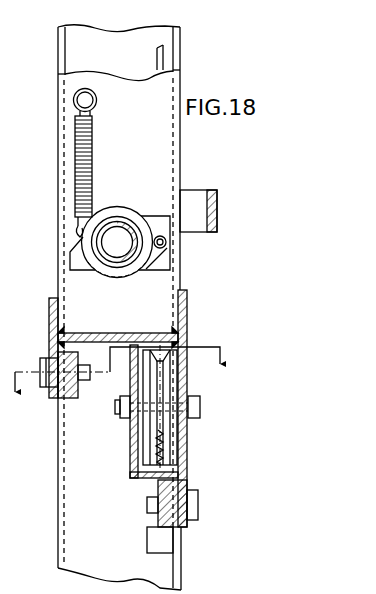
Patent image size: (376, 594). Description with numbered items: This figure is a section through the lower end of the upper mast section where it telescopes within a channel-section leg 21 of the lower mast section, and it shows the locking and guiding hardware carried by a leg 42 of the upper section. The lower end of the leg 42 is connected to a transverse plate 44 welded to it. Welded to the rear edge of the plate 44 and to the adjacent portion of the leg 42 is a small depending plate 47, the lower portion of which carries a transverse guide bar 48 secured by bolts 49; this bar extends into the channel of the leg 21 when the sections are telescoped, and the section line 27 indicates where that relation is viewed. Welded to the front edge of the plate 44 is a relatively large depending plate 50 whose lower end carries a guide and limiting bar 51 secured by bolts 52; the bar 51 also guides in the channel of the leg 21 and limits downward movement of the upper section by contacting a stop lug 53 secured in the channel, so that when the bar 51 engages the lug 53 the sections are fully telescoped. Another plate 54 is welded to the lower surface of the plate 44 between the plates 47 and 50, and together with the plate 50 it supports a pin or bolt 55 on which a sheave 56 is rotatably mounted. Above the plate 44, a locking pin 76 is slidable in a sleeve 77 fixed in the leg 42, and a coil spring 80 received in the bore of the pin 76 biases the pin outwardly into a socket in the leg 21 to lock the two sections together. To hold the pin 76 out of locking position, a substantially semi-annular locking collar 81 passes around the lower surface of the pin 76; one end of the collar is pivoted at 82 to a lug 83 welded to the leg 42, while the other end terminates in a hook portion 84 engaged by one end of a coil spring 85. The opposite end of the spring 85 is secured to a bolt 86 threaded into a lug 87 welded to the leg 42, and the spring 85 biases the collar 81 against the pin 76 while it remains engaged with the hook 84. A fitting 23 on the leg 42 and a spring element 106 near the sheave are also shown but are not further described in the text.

The leg 21 is at (165, 578).
The stop block 23 is at (200, 197).
The section line 27- 27 is at (116, 380).
The leg 42 is at (163, 163).
The transverse plate 44 is at (150, 332).
The depending plate 47 is at (50, 320).
The transverse guide bar 48 is at (66, 398).
The bolt 49 is at (42, 359).
The depending plate 50 is at (185, 446).
The guide and limiting bar 51 is at (163, 512).
The bolt 52 is at (193, 498).
The stop lug 53 is at (150, 540).
The plate 54 is at (130, 381).
The pin or bolt 55 is at (115, 408).
The sheave 56 is at (143, 452).
The locking pin 76 is at (117, 222).
The sleeve 77 is at (135, 227).
The coil spring 80 is at (129, 232).
The locking collar 81 is at (104, 278).
The pivot 82 is at (167, 243).
The lug 83 is at (164, 263).
The hook portion 84 is at (71, 235).
The coil spring 85 is at (73, 203).
The bolt 86 is at (73, 100).
The lug 87 is at (96, 104).
The spring clip 106 is at (155, 53).